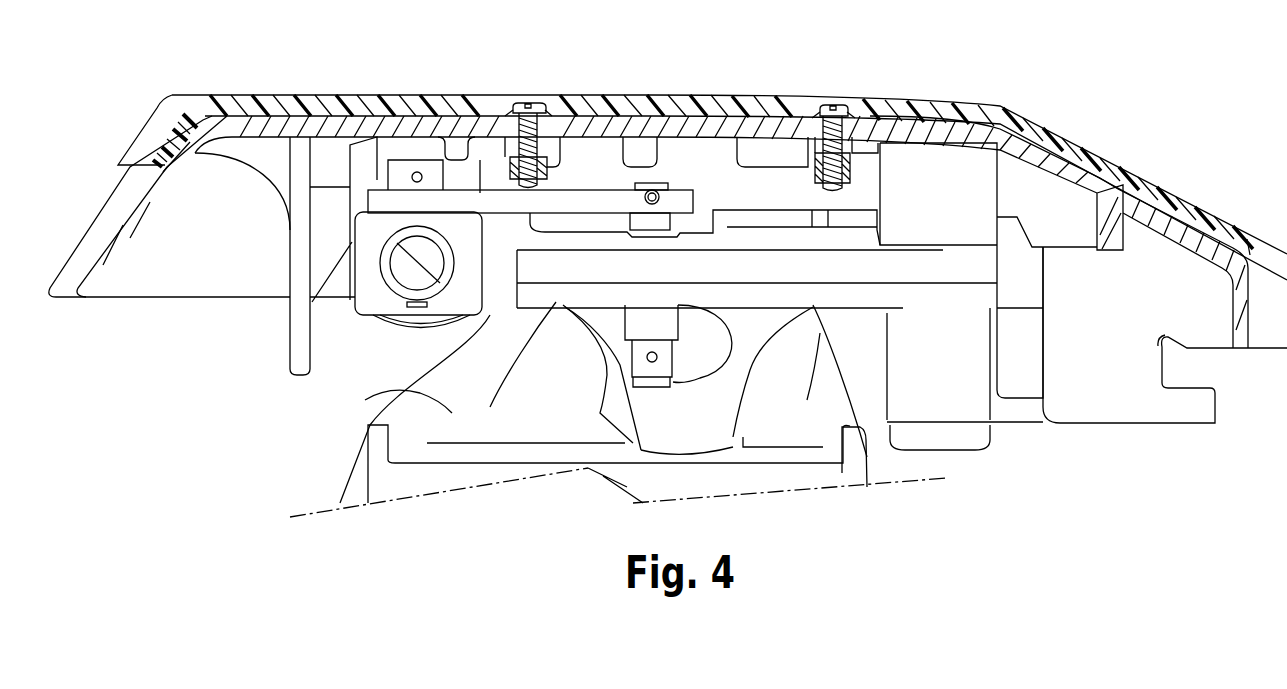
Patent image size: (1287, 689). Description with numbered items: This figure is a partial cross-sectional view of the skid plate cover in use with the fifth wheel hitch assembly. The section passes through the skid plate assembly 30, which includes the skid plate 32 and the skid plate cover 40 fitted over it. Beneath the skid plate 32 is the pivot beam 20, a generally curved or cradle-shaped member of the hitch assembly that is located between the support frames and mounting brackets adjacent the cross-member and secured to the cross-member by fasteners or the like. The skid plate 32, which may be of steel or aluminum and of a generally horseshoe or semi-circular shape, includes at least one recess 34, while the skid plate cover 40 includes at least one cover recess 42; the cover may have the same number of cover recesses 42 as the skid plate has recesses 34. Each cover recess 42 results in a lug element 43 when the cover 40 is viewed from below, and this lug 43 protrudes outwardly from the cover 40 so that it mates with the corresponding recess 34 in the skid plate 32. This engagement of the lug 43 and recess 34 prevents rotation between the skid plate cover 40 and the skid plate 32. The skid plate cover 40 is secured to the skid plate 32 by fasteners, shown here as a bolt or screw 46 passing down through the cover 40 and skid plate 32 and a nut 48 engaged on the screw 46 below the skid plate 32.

The pivot beam 20 is at (365, 400).
The skid plate assembly 30 is at (163, 87).
The skid plate 32 is at (1095, 182).
The recess 34 is at (505, 130).
The skid plate cover 40 is at (1052, 142).
The cover recess 42 is at (510, 104).
The lug element 43 is at (548, 110).
The bolt or screw 46 is at (528, 103).
The nut 48 is at (555, 167).